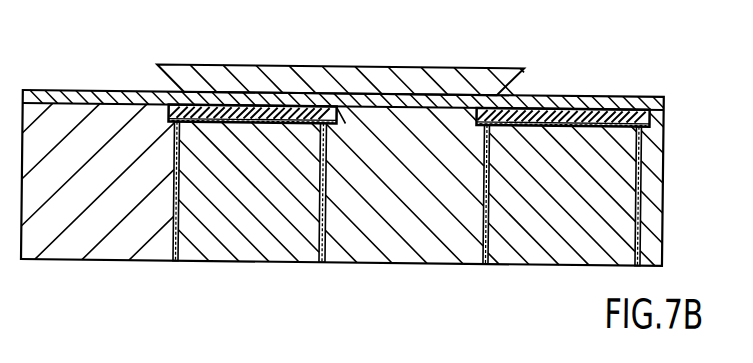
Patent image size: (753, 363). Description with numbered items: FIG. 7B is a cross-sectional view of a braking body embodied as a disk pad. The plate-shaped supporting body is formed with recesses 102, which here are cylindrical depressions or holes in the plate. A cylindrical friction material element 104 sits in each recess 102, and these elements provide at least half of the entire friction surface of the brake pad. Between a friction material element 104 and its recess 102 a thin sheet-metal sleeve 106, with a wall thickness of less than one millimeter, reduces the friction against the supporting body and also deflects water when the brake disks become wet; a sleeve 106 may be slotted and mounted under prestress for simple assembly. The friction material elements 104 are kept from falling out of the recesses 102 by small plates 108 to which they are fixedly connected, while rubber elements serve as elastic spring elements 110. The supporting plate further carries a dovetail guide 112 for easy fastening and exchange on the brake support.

The recess 102 is at (323, 241).
The friction material element 104 is at (253, 230).
The sleeve 106 is at (170, 229).
The small plate 108 is at (447, 99).
The elastic spring element 110 is at (157, 91).
The dovetail guide 112 is at (495, 77).